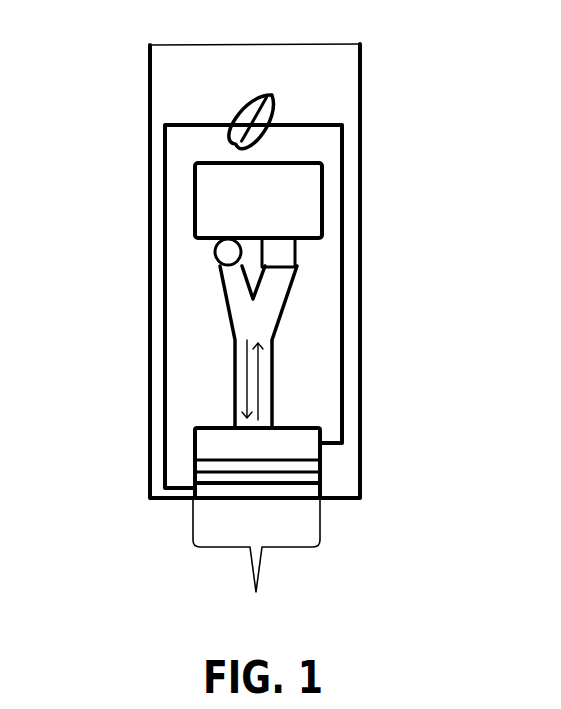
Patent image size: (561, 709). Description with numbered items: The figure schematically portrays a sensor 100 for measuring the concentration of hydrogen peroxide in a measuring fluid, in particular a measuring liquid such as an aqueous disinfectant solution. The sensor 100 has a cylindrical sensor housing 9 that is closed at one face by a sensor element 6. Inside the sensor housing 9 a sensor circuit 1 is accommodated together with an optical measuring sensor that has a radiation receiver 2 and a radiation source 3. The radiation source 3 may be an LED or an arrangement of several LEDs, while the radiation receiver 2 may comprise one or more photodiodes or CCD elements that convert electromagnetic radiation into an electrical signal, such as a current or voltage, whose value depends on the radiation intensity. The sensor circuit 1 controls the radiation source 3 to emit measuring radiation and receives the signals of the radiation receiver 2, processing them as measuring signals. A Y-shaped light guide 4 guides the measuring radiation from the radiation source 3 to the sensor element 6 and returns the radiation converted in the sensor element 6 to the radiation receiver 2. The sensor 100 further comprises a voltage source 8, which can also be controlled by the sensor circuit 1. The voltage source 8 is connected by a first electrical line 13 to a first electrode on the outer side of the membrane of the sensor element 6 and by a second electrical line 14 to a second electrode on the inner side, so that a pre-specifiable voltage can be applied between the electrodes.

The sensor 100 is at (231, 330).
The sensor circuit 1 is at (258, 200).
The radiation receiver 2 is at (278, 252).
The radiation source 3 is at (228, 252).
The Y-shaped light guide 4 is at (259, 346).
The sensor element 6 is at (256, 571).
The voltage source 8 is at (258, 99).
The sensor housing 9 is at (149, 452).
The first electrical line 13 is at (149, 352).
The second electrical line 14 is at (344, 322).